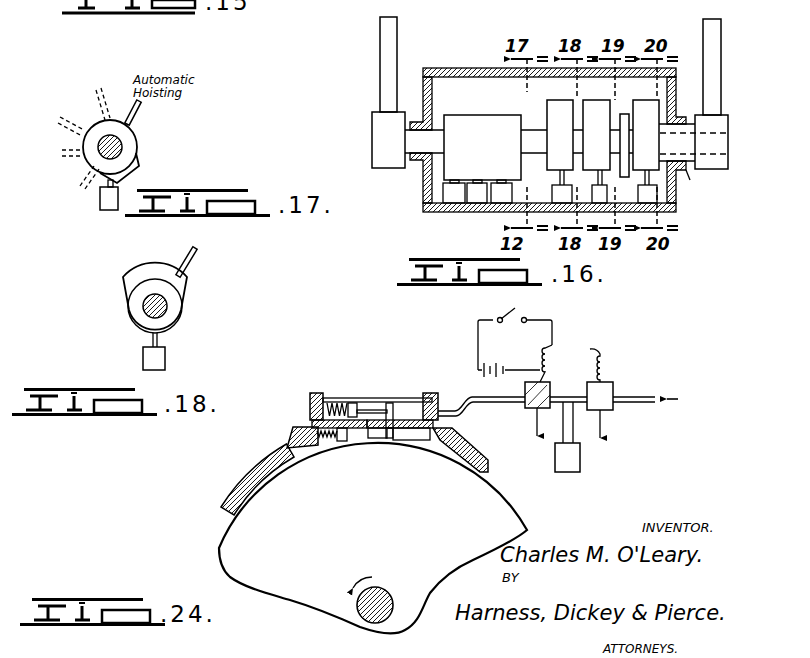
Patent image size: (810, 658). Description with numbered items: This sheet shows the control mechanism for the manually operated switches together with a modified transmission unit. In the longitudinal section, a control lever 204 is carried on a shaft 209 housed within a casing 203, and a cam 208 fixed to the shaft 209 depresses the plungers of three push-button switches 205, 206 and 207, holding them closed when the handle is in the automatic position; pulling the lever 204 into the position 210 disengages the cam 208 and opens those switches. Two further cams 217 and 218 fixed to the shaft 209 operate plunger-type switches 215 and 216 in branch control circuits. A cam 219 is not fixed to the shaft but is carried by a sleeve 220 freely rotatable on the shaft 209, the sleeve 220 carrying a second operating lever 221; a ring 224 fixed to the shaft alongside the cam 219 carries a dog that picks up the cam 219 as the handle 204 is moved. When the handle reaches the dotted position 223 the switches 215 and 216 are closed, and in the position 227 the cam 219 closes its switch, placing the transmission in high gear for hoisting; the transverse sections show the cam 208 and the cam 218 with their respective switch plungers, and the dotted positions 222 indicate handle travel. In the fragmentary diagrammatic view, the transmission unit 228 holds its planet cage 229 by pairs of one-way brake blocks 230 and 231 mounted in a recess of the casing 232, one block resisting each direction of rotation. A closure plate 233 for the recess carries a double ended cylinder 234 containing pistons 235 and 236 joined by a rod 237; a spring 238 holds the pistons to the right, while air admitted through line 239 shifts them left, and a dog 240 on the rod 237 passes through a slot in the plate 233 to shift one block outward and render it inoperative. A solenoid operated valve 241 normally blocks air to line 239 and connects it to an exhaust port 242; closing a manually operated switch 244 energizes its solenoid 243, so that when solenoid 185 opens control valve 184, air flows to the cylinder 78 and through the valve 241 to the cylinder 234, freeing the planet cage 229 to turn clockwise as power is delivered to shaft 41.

In FIG. 16, the housing 203 is at (431, 176).
In FIG. 17, the control lever 204 is at (140, 112).
In FIG. 16, the control lever 204 is at (380, 57).
In FIG. 16, the normally open switch 205 is at (448, 192).
In FIG. 16, the normally open switch 206 is at (476, 199).
In FIG. 17, the normally open switch 207 is at (107, 211).
In FIG. 16, the normally open switch 207 is at (499, 200).
In FIG. 17, the cam 208 is at (138, 171).
In FIG. 17, the shaft 209 is at (121, 146).
In FIG. 16, the shaft 209 is at (432, 130).
In FIG. 17, the solid line position 210 is at (97, 88).
In FIG. 16, the normally open switch 215 is at (593, 191).
In FIG. 16, the normally open switch 216 is at (552, 190).
In FIG. 18, the normally open switch 216 is at (164, 361).
In FIG. 16, the cam 217 is at (590, 107).
In FIG. 16, the cam 218 is at (547, 106).
In FIG. 18, the cam 218 is at (124, 279).
In FIG. 16, the cam 219 is at (644, 112).
In FIG. 16, the sleeve 220 is at (690, 180).
In FIG. 16, the second operating lever 221 is at (722, 56).
In FIG. 17, the lead 222 is at (71, 88).
In FIG. 17, the dotted line position 223 is at (58, 160).
In FIG. 16, the ring 224 is at (622, 114).
In FIG. 17, the dotted line position 227 is at (80, 188).
In FIG. 24, the transmission unit 228 is at (207, 546).
In FIG. 24, the planet cage 229 is at (232, 522).
In FIG. 24, the brake block 230 is at (335, 434).
In FIG. 24, the brake block 231 is at (410, 432).
In FIG. 24, the casing 232 is at (470, 450).
In FIG. 24, the closure plate 233 is at (292, 424).
In FIG. 24, the double ended cylinder 234 is at (387, 403).
In FIG. 24, the piston 235 is at (356, 402).
In FIG. 24, the piston 236 is at (430, 394).
In FIG. 24, the rod 237 is at (398, 405).
In FIG. 24, the spring 238 is at (328, 400).
In FIG. 24, the line 239 is at (448, 406).
In FIG. 24, the dog 240 is at (388, 438).
In FIG. 24, the valve 241 is at (530, 410).
In FIG. 24, the exhaust port 242 is at (548, 414).
In FIG. 24, the solenoid 243 is at (546, 358).
In FIG. 24, the manually operated switch 244 is at (517, 312).
In FIG. 24, the solenoid 185 is at (598, 350).
In FIG. 24, the control valve 184 is at (606, 411).
In FIG. 24, the cylinder 78 is at (575, 462).
In FIG. 24, the shaft 41 is at (384, 603).